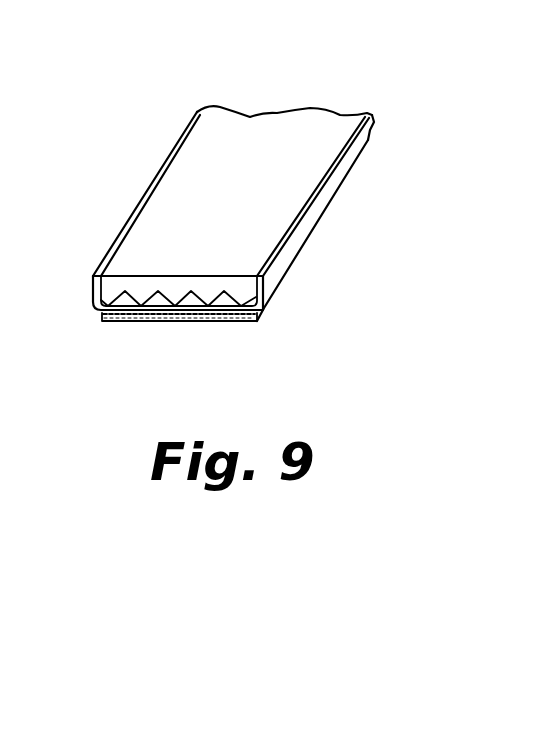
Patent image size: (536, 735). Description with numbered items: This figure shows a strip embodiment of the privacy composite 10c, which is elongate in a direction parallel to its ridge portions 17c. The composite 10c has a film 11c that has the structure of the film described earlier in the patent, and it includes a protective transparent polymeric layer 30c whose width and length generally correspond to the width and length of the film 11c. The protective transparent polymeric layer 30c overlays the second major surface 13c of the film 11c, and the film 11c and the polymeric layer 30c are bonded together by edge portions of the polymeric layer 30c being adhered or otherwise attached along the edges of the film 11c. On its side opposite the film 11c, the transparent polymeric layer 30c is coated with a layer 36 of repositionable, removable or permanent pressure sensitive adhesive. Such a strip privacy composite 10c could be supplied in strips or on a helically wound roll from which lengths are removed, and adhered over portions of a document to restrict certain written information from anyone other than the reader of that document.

The privacy composite 10c is at (257, 218).
The film 11c is at (175, 287).
The second major surface 13c is at (150, 295).
The ridge portions 17c is at (147, 297).
The protective transparent polymeric layer 30c is at (292, 253).
The layer of pressure sensitive adhesive 36 is at (193, 321).